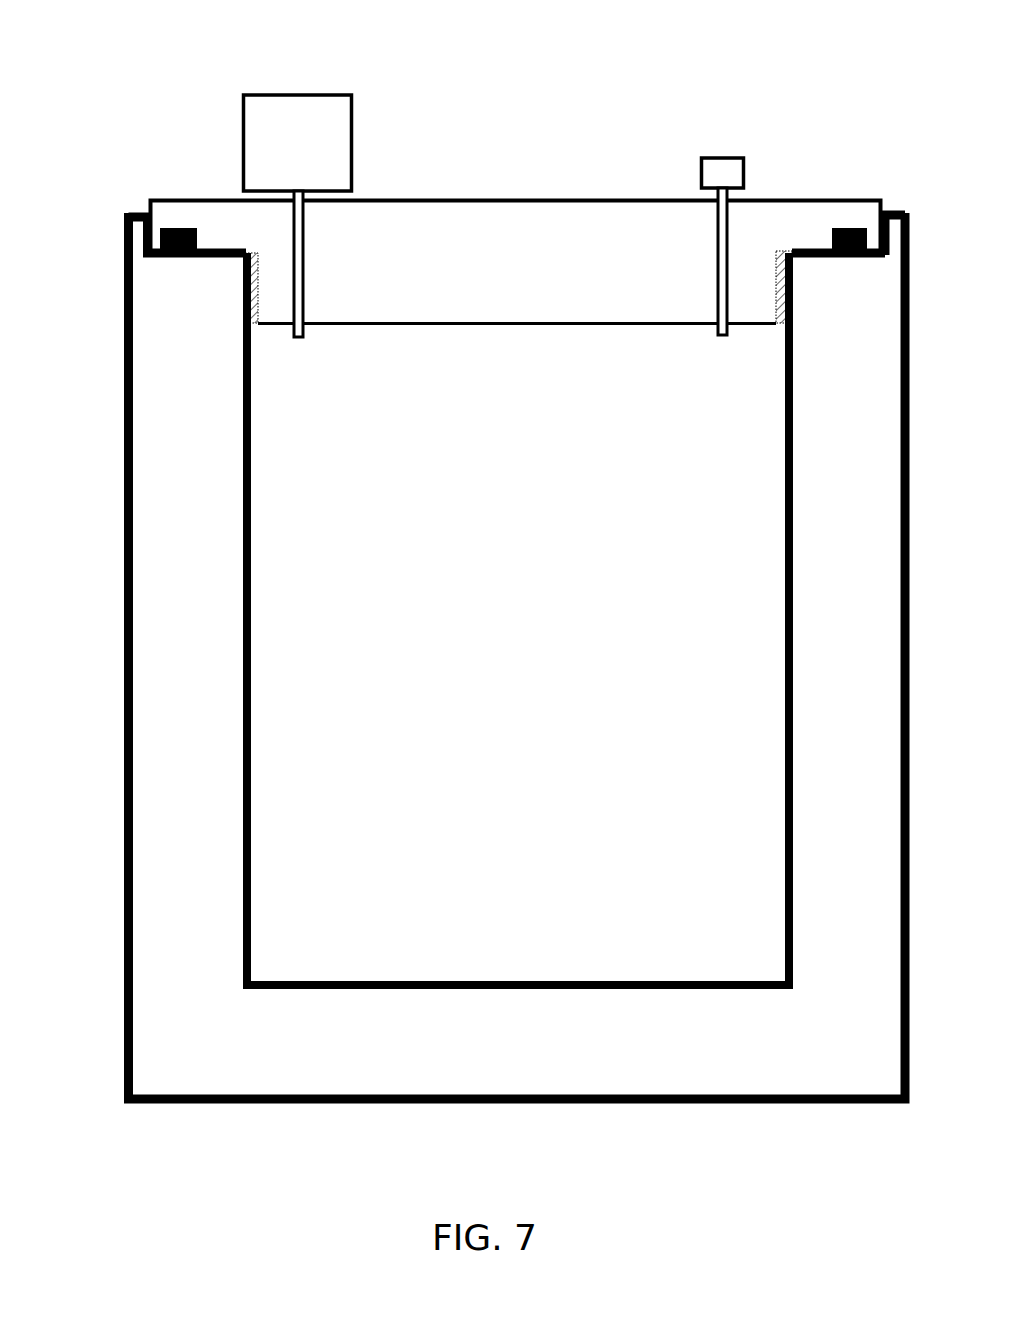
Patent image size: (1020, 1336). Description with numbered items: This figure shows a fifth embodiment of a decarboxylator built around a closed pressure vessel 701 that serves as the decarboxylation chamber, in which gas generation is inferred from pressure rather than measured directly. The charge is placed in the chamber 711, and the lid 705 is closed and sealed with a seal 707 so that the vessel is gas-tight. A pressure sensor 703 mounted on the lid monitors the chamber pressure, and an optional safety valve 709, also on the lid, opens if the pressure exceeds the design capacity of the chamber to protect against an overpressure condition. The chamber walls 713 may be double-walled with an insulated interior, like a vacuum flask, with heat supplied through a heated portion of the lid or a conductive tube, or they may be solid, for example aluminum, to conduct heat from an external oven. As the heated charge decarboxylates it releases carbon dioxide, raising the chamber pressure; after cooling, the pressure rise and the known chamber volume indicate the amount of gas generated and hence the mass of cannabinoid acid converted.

The closed pressure vessel 701 is at (98, 456).
The pressure sensor 703 is at (265, 107).
The lid 705 is at (403, 278).
The seal 707 is at (163, 231).
The safety valve 709 is at (722, 168).
The chamber 711 is at (546, 680).
The chamber walls 713 is at (812, 848).